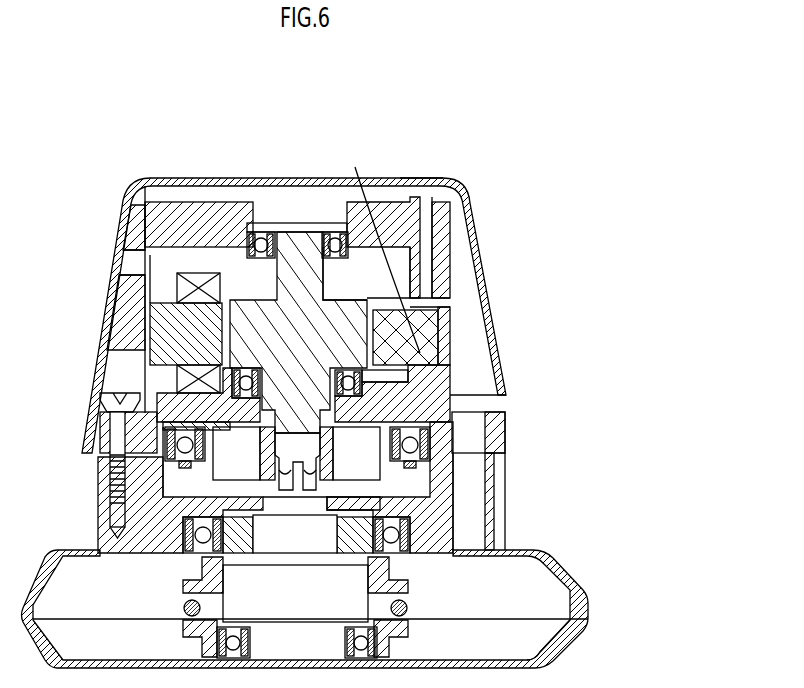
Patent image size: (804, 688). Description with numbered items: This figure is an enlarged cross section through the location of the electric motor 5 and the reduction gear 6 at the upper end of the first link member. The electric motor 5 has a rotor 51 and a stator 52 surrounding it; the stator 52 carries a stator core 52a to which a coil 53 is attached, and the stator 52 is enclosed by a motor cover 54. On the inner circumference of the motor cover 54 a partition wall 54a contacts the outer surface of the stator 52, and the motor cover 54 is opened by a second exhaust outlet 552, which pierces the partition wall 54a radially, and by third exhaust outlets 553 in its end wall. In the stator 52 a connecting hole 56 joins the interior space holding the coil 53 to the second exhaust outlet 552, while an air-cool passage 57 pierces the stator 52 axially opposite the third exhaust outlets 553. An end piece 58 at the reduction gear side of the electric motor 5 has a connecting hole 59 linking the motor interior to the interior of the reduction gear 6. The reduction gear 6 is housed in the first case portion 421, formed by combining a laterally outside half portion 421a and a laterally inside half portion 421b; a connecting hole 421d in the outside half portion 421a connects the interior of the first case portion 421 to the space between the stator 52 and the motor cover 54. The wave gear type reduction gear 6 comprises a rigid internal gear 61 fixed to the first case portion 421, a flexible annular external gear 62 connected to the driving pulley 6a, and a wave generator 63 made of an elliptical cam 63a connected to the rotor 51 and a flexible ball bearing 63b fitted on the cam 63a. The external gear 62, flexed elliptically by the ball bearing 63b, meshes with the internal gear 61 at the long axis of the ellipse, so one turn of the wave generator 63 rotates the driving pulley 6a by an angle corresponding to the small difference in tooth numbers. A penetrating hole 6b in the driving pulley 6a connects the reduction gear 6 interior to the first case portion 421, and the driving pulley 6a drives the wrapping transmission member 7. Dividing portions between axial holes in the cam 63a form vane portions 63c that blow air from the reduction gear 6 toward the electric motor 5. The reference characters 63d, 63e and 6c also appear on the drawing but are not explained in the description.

The electric motor 5 is at (312, 342).
The motor cover 54 is at (249, 178).
The third exhaust outlet 553 is at (427, 178).
The second exhaust outlet 552 is at (122, 264).
The air-cool passage 57 is at (445, 268).
The connecting hole 56 is at (150, 263).
The coil 53 is at (221, 285).
The rotor 51 is at (325, 277).
The partition wall 54a is at (118, 315).
The stator core 52a is at (180, 347).
The connecting hole 59 is at (190, 413).
The end piece 58 is at (263, 408).
The vane portion 63c is at (305, 470).
The clamp base plate 63e is at (410, 398).
The stator 52 is at (497, 403).
The internal gear 61 is at (125, 445).
The external gear 62 is at (110, 489).
The reduction gear 6 is at (133, 522).
The wave generator 63 is at (205, 470).
The ball bearing 63b is at (408, 454).
The bearing holder 63d is at (295, 534).
The elliptical cam 63a is at (341, 521).
The first case portion 421 is at (334, 565).
The connecting hole 421d is at (488, 489).
The laterally outside half portion 421a is at (497, 542).
The laterally inside half portion 421b is at (566, 646).
The penetrating hole 6b is at (309, 599).
The wrapping transmission member 7 is at (184, 606).
The driving pulley 6a is at (186, 634).
The right shaft hub 6c is at (380, 617).